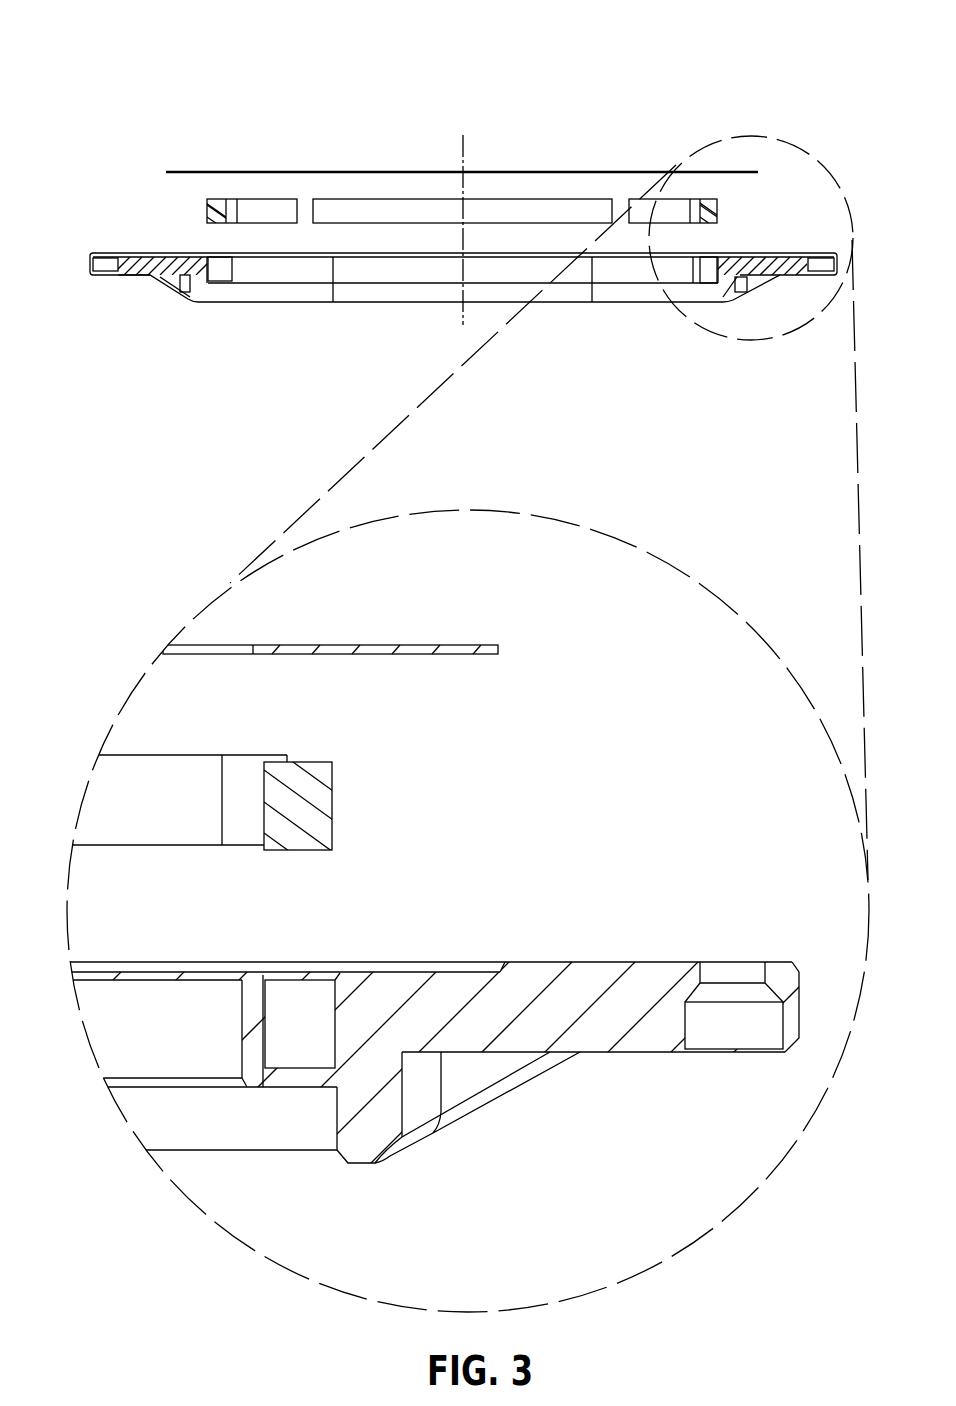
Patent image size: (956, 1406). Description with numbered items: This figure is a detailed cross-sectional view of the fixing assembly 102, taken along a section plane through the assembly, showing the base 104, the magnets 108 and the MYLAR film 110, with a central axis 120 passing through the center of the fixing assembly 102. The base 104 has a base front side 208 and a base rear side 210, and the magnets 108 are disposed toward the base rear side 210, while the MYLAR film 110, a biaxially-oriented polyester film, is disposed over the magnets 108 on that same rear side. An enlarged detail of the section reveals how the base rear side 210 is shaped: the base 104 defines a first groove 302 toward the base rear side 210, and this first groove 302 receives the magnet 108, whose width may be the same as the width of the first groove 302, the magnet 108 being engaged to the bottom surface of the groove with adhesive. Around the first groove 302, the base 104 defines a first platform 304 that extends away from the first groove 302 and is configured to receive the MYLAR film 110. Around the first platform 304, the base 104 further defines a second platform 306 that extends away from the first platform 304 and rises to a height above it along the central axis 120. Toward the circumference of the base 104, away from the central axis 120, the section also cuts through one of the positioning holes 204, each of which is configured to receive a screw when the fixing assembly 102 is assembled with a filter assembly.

The fixing assembly 102 is at (436, 192).
The base 104 is at (457, 315).
The magnet 108 is at (401, 210).
The MYLAR film 110 is at (417, 141).
The central axis 120 is at (508, 199).
The positioning holes 204 is at (691, 1059).
The base front side 208 is at (477, 1153).
The base rear side 210 is at (412, 1051).
The first groove 302 is at (248, 985).
The first platform 304 is at (272, 922).
The second platform 306 is at (412, 1059).